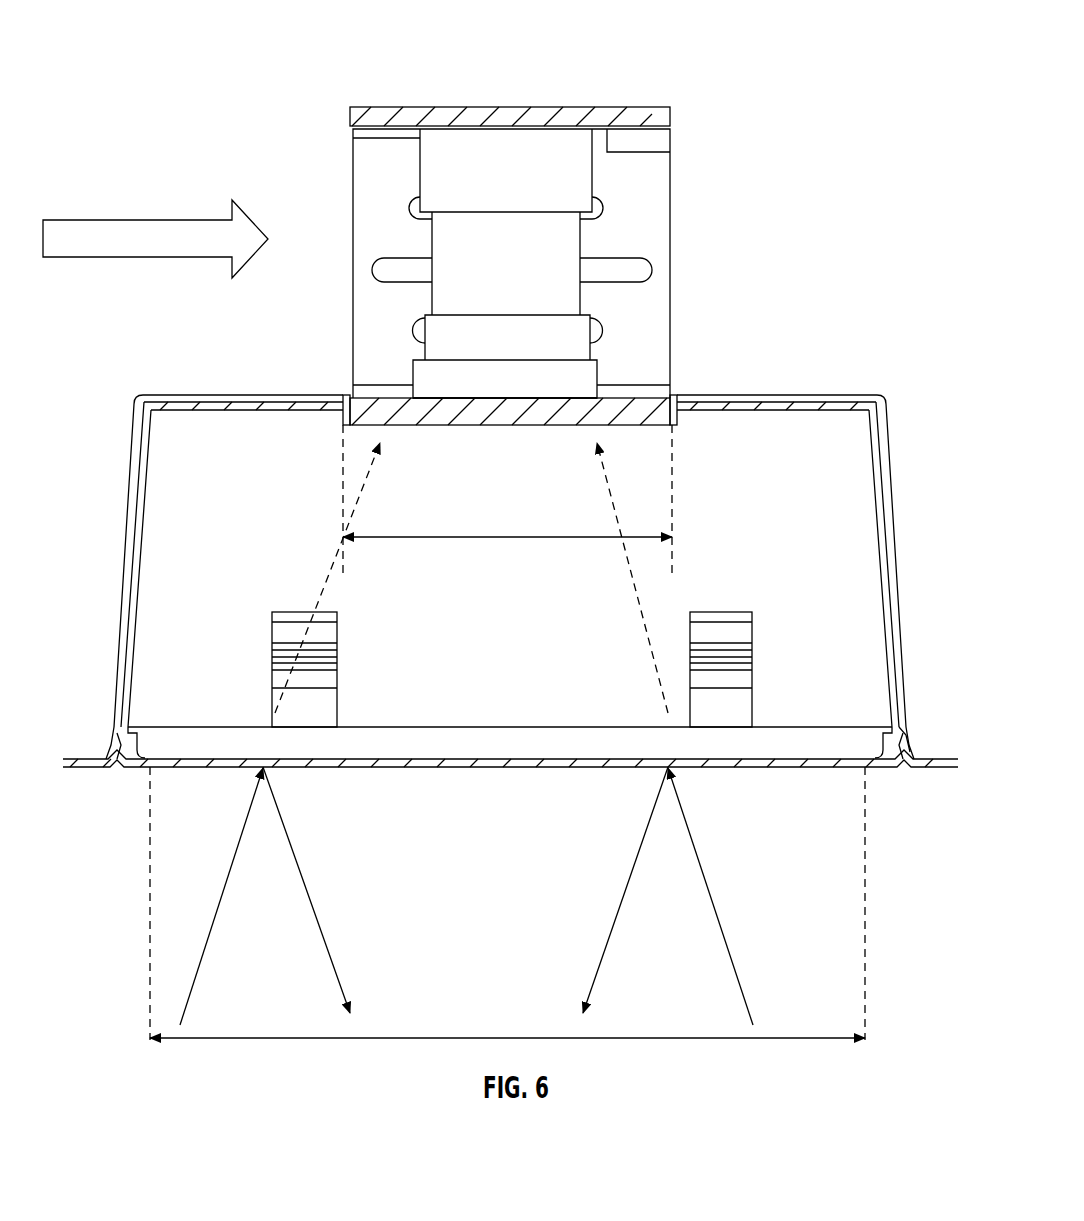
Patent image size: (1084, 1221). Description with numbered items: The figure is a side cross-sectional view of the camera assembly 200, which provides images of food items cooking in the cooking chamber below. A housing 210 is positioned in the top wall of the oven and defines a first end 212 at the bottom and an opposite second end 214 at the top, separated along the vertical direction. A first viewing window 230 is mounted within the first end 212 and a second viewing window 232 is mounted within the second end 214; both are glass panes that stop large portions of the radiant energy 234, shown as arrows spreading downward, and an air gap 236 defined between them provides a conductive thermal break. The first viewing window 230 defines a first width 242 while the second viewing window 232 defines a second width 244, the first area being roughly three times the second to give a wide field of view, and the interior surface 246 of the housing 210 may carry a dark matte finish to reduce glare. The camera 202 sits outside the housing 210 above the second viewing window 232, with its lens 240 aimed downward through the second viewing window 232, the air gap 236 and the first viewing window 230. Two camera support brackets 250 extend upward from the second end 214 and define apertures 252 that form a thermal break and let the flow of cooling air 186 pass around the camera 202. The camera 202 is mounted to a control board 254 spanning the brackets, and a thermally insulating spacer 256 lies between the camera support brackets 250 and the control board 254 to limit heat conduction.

The camera assembly 200 is at (808, 78).
The flow of cooling air 186 is at (191, 238).
The control board 254 is at (390, 125).
The thermally insulating spacer 256 is at (650, 125).
The camera support brackets 250 is at (658, 192).
The camera 202 is at (515, 281).
The apertures 252 is at (642, 268).
The second viewing window 232 is at (647, 425).
The lens 240 is at (483, 399).
The second end 214 is at (822, 394).
The interior surface 246 is at (141, 556).
The housing 210 is at (900, 568).
The air gap 236 is at (515, 683).
The first viewing window 230 is at (808, 768).
The first end 212 is at (915, 770).
The second width 244 is at (495, 537).
The radiant energy 234 is at (313, 910).
The first width 242 is at (415, 1038).